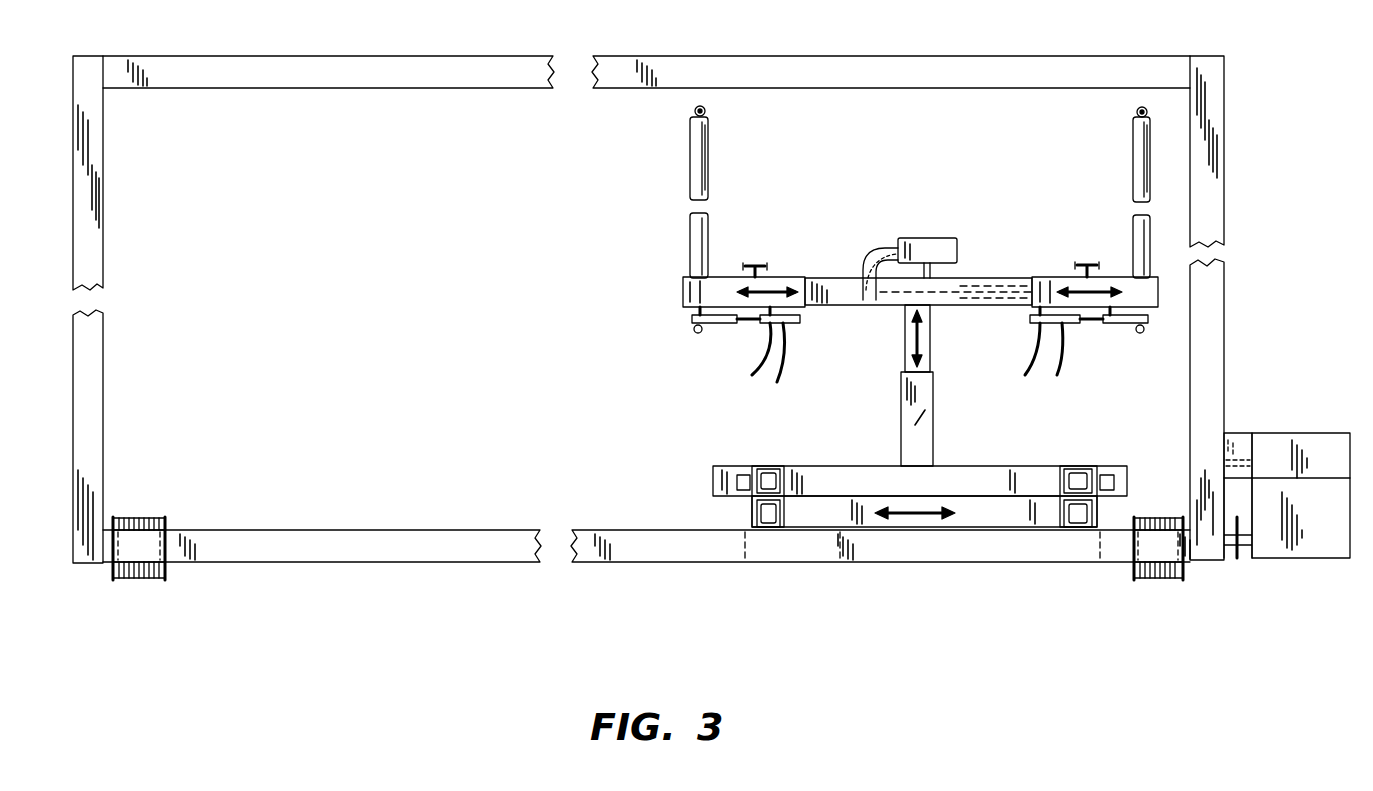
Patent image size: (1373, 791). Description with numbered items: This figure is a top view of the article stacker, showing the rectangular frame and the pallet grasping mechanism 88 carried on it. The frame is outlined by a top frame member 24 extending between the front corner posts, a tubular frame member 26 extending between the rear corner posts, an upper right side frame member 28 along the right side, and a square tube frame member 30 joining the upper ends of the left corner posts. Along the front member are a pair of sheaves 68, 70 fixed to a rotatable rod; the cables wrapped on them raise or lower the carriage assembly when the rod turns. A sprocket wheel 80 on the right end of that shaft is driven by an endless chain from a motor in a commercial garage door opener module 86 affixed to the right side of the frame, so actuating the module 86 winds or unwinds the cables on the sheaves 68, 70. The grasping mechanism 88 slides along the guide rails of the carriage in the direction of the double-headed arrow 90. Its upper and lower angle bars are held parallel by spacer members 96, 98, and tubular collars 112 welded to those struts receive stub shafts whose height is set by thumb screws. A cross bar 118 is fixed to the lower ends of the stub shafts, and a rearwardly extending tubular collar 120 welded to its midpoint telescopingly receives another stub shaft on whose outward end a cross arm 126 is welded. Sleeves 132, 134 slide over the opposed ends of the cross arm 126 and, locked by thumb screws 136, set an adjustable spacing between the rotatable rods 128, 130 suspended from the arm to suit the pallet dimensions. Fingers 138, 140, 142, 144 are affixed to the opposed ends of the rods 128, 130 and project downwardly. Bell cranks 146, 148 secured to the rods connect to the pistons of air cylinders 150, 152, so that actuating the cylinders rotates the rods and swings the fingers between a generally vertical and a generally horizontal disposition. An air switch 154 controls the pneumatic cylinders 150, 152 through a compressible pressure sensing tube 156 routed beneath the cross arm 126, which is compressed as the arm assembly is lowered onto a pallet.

The top frame member 24 is at (697, 565).
The tubular frame member 26 is at (664, 55).
The upper right side frame member 28 is at (1224, 283).
The square tube frame member 30 is at (97, 248).
The sheave 68 is at (165, 517).
The sheave 70 is at (1135, 575).
The sprocket wheel 80 is at (1240, 560).
The garage door opener module 86 is at (1322, 548).
The pallet grasping mechanism 88 is at (670, 398).
The double-headed arrow 90 is at (925, 510).
The spacer member 96 is at (756, 510).
The spacer member 98 is at (1095, 521).
The tubular collar 112 is at (768, 468).
The cross bar 118 is at (835, 466).
The tubular collar 120 is at (932, 398).
The cross arm 126 is at (835, 278).
The rotatable rod 128 is at (690, 165).
The rotatable rod 130 is at (1133, 165).
The sleeve 132 is at (720, 277).
The sleeve 134 is at (1048, 277).
The thumb screws 136 is at (755, 262).
The finger 138 is at (705, 111).
The finger 140 is at (694, 331).
The finger 142 is at (1136, 113).
The finger 144 is at (1140, 333).
The bell crank 146 is at (733, 325).
The bell crank 148 is at (1110, 324).
The air cylinder 150 is at (798, 325).
The air cylinder 152 is at (1030, 324).
The air switch 154 is at (927, 238).
The compressible pressure sensing tube 156 is at (880, 245).